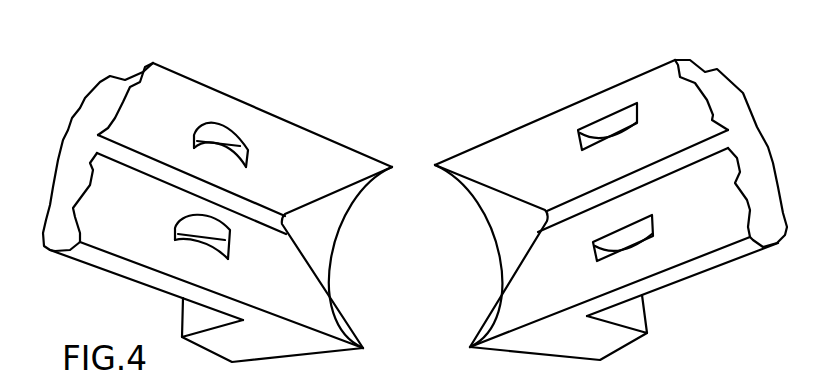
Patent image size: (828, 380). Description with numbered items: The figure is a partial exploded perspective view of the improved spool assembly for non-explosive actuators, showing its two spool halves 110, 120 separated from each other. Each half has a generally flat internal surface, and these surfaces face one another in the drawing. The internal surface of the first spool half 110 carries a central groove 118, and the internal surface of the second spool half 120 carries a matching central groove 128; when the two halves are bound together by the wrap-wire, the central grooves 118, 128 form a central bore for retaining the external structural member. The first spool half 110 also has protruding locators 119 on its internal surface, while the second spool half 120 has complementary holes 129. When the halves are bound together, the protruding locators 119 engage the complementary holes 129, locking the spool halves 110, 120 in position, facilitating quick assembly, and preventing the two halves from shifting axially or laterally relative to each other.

The spool half 110 is at (229, 187).
The central groove 118 is at (145, 173).
The protruding locators 119 is at (248, 150).
The spool half 120 is at (596, 186).
The central groove 128 is at (678, 168).
The complementary holes 129 is at (580, 140).